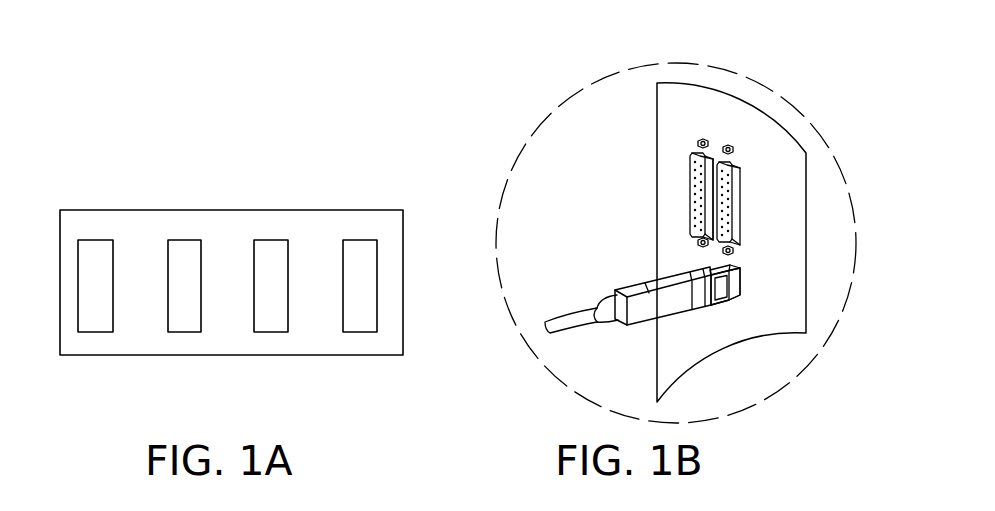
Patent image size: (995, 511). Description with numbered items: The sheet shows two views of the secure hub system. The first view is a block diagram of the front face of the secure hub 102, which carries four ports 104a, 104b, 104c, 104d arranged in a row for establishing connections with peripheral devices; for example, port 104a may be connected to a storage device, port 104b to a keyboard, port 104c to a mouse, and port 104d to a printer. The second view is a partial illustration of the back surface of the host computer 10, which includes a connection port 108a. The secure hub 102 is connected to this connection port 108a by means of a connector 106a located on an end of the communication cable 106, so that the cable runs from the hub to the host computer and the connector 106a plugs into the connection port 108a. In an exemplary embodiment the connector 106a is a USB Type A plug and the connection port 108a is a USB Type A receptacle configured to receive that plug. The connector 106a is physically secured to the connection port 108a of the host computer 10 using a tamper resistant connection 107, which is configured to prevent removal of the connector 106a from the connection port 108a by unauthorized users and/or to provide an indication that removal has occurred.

In FIG. 1B, the host computer 10 is at (717, 118).
In FIG. 1A, the secure hub 102 is at (292, 210).
In FIG. 1A, the port 104a is at (99, 332).
In FIG. 1A, the port 104b is at (187, 332).
In FIG. 1A, the port 104c is at (276, 332).
In FIG. 1A, the port 104d is at (363, 332).
In FIG. 1B, the communication cable 106 is at (573, 318).
In FIG. 1B, the connector 106a is at (697, 283).
In FIG. 1B, the tamper resistant connection 107 is at (723, 293).
In FIG. 1B, the connection port 108a is at (739, 283).